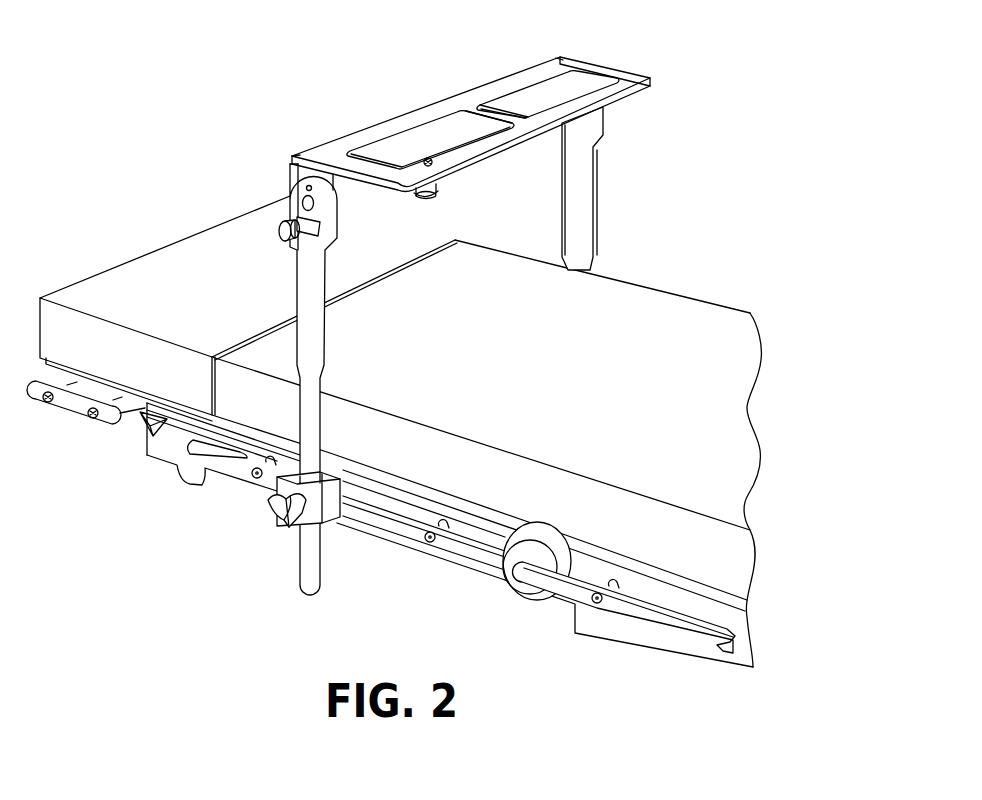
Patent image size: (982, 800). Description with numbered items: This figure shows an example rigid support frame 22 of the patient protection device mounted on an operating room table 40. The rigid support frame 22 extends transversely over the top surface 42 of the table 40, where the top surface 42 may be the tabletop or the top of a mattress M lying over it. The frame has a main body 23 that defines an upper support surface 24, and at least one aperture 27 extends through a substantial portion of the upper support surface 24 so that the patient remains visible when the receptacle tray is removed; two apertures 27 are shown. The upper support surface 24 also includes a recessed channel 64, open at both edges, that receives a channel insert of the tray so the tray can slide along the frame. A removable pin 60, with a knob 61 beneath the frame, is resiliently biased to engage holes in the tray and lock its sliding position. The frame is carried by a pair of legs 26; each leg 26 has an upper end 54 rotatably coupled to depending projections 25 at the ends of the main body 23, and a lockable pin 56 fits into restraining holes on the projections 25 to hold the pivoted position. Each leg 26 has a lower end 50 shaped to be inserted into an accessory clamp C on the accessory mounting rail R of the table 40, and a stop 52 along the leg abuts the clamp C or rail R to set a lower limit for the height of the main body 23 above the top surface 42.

The rigid support frame 22 is at (444, 120).
The main body 23 is at (517, 125).
The upper support surface 24 is at (429, 100).
The depending projections 25 is at (290, 170).
The legs 26 is at (320, 352).
The aperture 27 is at (522, 101).
The operating room table 40 is at (240, 490).
The top surface 42 is at (600, 386).
The lower end 50 is at (303, 573).
The stop 52 is at (442, 339).
The upper end 54 is at (297, 208).
The lockable pin 56 is at (282, 239).
The removable pin 60 is at (433, 163).
The knob 61 is at (418, 196).
The recessed channel 64 is at (548, 47).
The mattress M is at (110, 277).
The accessory clamps C is at (309, 530).
The accessory mounting rail R is at (465, 555).